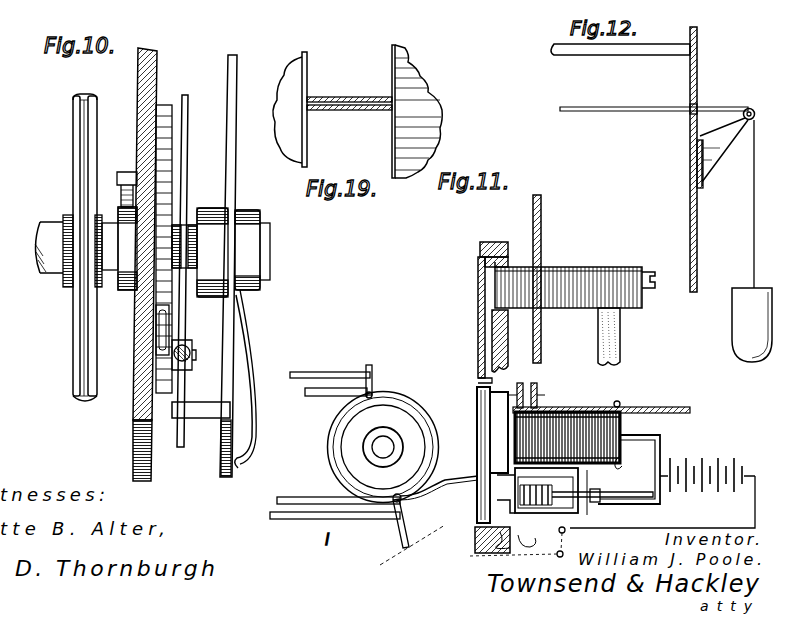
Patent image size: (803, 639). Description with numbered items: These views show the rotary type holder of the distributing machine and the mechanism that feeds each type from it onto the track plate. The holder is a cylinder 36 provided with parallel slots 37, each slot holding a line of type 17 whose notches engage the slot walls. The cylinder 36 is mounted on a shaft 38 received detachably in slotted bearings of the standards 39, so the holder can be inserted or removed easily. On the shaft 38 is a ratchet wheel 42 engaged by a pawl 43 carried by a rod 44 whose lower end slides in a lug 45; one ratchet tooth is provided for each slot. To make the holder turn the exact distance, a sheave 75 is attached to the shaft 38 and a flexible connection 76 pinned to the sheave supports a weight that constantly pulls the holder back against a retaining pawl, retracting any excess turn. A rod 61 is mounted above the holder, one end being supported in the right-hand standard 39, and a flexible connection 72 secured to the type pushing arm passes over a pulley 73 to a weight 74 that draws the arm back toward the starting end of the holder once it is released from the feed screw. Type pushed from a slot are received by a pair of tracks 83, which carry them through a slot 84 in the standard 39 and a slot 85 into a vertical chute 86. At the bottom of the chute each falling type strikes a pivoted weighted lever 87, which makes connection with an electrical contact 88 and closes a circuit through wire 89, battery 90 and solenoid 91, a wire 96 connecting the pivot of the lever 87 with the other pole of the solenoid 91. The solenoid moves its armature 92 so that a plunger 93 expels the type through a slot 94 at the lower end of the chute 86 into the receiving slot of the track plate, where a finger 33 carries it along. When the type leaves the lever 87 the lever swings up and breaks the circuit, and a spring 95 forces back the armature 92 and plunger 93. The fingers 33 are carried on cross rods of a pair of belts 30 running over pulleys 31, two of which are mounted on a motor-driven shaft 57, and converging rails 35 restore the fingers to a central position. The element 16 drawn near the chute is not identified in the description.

In FIG. 10, the cylinder 36 is at (138, 80).
In FIG. 19, the cylinder 36 is at (340, 4).
In FIG. 11, the cylinder 36 is at (620, 355).
In FIG. 19, the parallel slots 37 is at (417, 99).
In FIG. 11, the parallel slots 37 is at (651, 270).
In FIG. 10, the shaft 38 is at (40, 280).
In FIG. 10, the standards 39 is at (246, 365).
In FIG. 12, the standards 39 is at (697, 80).
In FIG. 11, the standards 39 is at (542, 236).
In FIG. 10, the ratchet wheel 42 is at (177, 138).
In FIG. 10, the pawl 43 is at (163, 314).
In FIG. 10, the rod 44 is at (188, 178).
In FIG. 10, the lug 45 is at (215, 412).
In FIG. 10, the sheave 75 is at (75, 182).
In FIG. 10, the flexible connection 76 is at (78, 93).
In FIG. 19, the tracks 83 is at (323, 96).
In FIG. 11, the tracks 83 is at (480, 268).
In FIG. 11, the slot 84 is at (548, 267).
In FIG. 11, the slot 85 is at (512, 262).
In FIG. 11, the vertical chute 86 is at (481, 242).
In FIG. 11, the type 17 is at (644, 302).
In FIG. 11, the spring wire 16 is at (457, 478).
In FIG. 11, the belts 30 is at (363, 447).
In FIG. 11, the pulleys 31 is at (340, 444).
In FIG. 11, the shaft 57 is at (328, 462).
In FIG. 11, the converging rails 35 is at (315, 372).
In FIG. 11, the finger 33 is at (369, 367).
In FIG. 11, the plunger 93 is at (478, 432).
In FIG. 11, the slot 94 is at (489, 452).
In FIG. 11, the pivoted weighted lever 87 is at (478, 442).
In FIG. 11, the spring 95 is at (557, 516).
In FIG. 11, the wire 96 is at (594, 489).
In FIG. 11, the solenoid 91 is at (625, 432).
In FIG. 11, the armature 92 is at (621, 468).
In FIG. 11, the battery 90 is at (718, 460).
In FIG. 11, the wire 89 is at (623, 528).
In FIG. 11, the electrical contact 88 is at (470, 548).
In FIG. 12, the rod 61 is at (657, 48).
In FIG. 12, the flexible connection 72 is at (622, 111).
In FIG. 12, the pulley 73 is at (727, 137).
In FIG. 12, the weight 74 is at (752, 241).